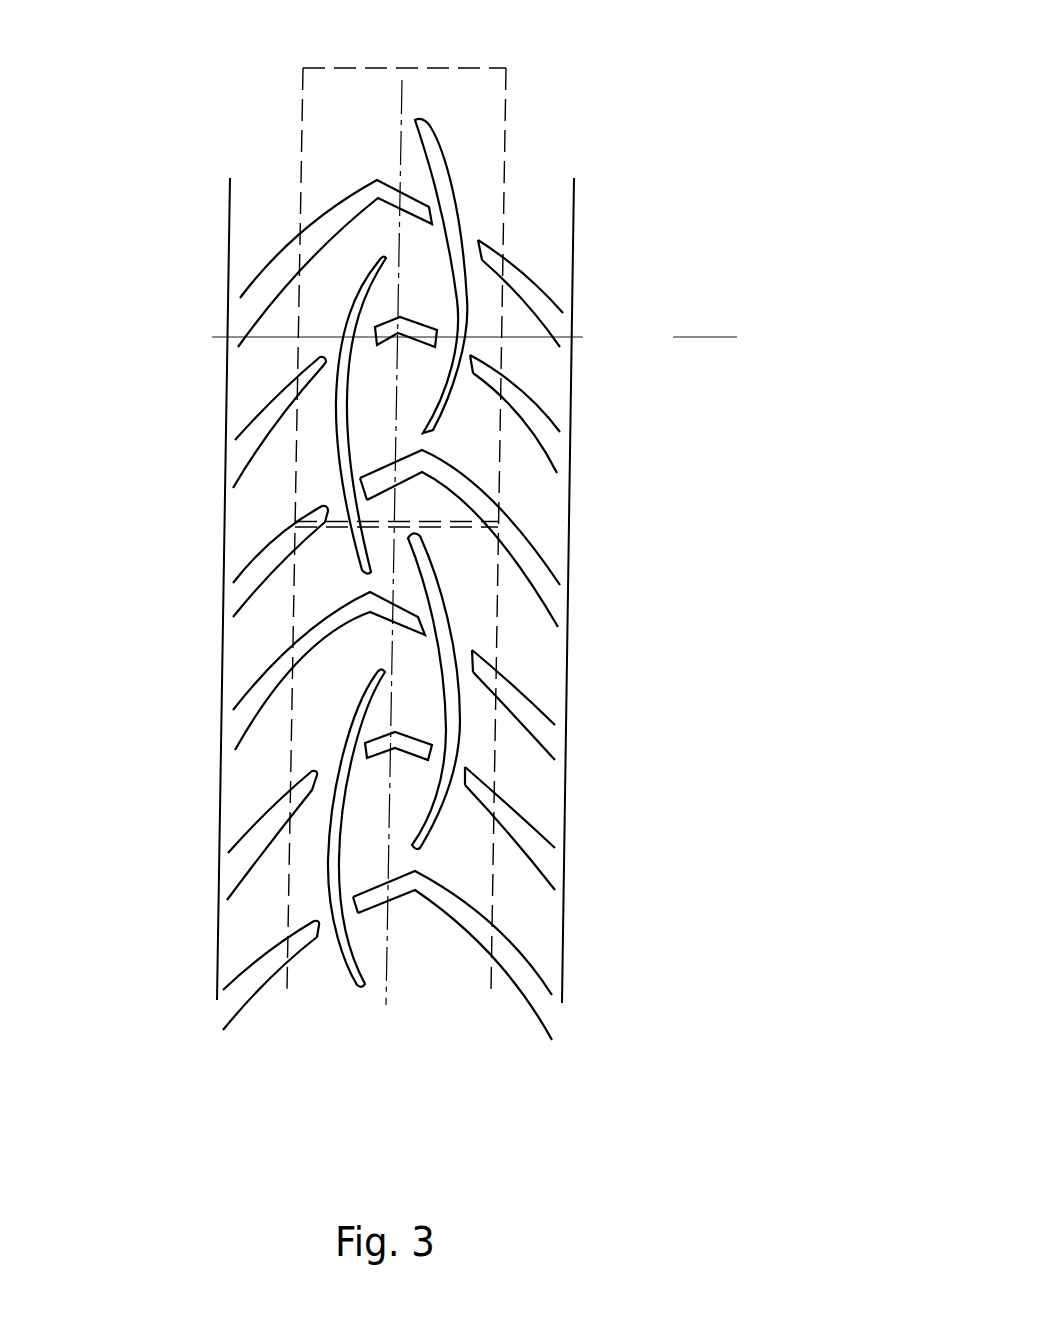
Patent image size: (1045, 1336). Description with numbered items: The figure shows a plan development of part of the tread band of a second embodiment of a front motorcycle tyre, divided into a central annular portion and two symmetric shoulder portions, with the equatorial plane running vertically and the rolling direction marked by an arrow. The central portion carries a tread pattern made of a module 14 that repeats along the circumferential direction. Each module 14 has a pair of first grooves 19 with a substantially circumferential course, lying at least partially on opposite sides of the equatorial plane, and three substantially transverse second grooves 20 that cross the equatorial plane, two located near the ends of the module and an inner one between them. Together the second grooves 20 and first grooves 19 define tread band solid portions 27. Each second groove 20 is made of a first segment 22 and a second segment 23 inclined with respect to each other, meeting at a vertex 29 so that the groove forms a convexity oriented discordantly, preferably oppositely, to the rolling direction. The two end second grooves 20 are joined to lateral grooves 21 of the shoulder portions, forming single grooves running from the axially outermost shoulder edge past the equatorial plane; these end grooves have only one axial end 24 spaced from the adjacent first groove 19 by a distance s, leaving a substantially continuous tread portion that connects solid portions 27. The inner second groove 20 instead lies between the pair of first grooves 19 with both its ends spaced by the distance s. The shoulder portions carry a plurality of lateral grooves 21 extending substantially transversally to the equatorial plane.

The module 14 is at (508, 92).
The first grooves 19 is at (333, 441).
The second grooves 20 is at (380, 337).
The lateral grooves 21 is at (250, 298).
The first segment 22 is at (440, 333).
The second segment 23 is at (375, 318).
The axial end 24 is at (462, 350).
The tread band solid portions 27 is at (442, 258).
The vertex 29 is at (400, 295).